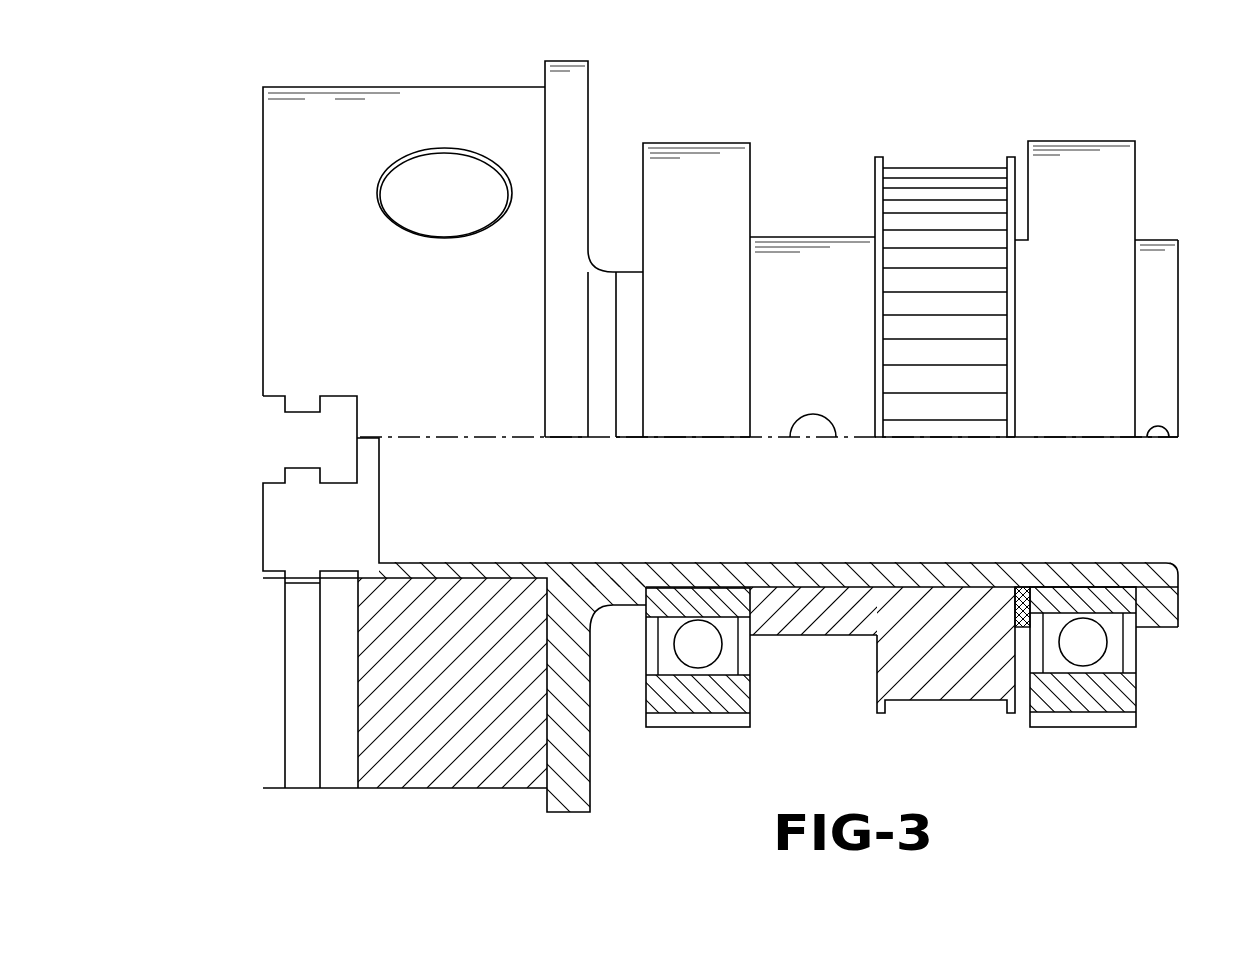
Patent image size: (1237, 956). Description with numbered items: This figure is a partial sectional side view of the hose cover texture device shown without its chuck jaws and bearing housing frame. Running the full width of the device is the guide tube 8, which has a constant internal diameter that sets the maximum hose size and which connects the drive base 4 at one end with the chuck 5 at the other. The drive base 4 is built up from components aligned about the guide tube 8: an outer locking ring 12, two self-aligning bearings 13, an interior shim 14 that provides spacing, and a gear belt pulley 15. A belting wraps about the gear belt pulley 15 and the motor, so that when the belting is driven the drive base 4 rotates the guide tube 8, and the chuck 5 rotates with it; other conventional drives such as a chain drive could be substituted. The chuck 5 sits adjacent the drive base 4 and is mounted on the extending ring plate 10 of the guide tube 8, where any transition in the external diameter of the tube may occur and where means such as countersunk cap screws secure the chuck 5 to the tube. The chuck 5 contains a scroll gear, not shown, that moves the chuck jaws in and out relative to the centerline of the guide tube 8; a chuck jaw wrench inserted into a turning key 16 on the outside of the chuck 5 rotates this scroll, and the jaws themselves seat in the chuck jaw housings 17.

The drive base 4 is at (848, 108).
The chuck 5 is at (316, 108).
The guide tube 8 is at (918, 560).
The extending ring plate 10 is at (568, 812).
The outer locking ring 12 is at (1160, 627).
The self-aligning bearings 13 is at (686, 141).
The interior shim 14 is at (1023, 627).
The gear belt pulley 15 is at (845, 637).
The turning key 16 is at (452, 175).
The chuck jaw housing 17 is at (308, 436).